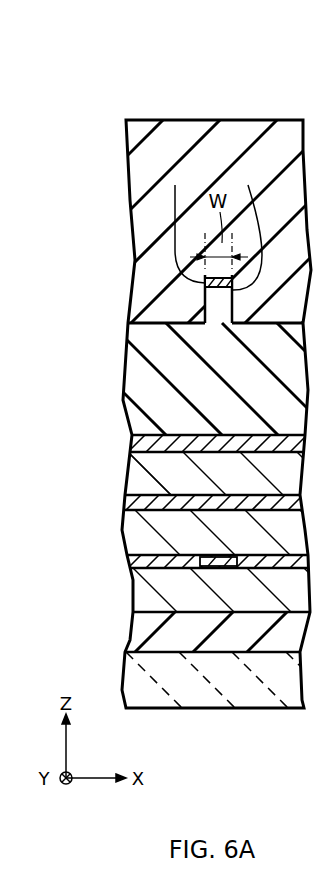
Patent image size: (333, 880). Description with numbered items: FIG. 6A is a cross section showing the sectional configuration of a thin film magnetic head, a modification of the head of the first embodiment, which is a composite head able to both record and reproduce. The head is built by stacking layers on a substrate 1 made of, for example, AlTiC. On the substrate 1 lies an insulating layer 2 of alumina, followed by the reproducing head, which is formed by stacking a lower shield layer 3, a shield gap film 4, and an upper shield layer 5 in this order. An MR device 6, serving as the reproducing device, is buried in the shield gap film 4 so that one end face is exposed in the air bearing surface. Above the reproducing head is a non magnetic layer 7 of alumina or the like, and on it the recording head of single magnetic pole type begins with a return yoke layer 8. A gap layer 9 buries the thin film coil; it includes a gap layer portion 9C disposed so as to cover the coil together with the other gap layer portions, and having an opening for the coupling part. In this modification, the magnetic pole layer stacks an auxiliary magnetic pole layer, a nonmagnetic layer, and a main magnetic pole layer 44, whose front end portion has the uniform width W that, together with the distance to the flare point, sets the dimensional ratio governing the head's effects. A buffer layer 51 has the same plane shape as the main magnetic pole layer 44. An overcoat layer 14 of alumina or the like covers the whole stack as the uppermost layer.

The substrate 1 is at (292, 688).
The insulating layer 2 is at (277, 627).
The lower shield layer 3 is at (250, 592).
The shield gap film 4 is at (177, 532).
The upper shield layer 5 is at (157, 483).
The MR device 6 is at (218, 563).
The non magnetic layer 7 is at (142, 480).
The return yoke layer 8 is at (139, 498).
The gap layer 9 is at (148, 447).
The gap layer portion 9C is at (273, 335).
The overcoat layer 14 is at (291, 127).
The main magnetic pole layer 44 is at (248, 233).
The buffer layer 51 is at (206, 283).